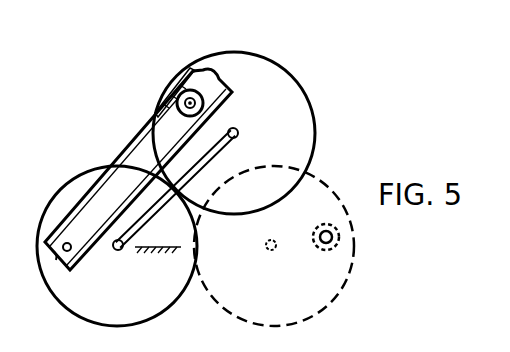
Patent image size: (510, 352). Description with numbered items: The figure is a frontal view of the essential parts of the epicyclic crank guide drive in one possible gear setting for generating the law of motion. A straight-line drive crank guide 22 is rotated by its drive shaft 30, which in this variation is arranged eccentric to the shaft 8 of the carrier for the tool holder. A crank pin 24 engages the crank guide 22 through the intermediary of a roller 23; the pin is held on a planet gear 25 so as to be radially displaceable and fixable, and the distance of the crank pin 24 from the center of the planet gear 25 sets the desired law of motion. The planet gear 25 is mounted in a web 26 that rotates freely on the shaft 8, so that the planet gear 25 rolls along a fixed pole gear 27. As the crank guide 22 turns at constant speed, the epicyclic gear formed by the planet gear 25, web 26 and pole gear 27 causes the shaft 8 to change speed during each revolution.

The shaft 8 is at (115, 252).
The drive crank guide 22 is at (137, 132).
The roller 23 is at (185, 76).
The crank pin 24 is at (203, 84).
The planet gear 25 is at (278, 90).
The web 26 is at (182, 197).
The fixed pole gear 27 is at (80, 193).
The drive shaft 30 is at (55, 255).